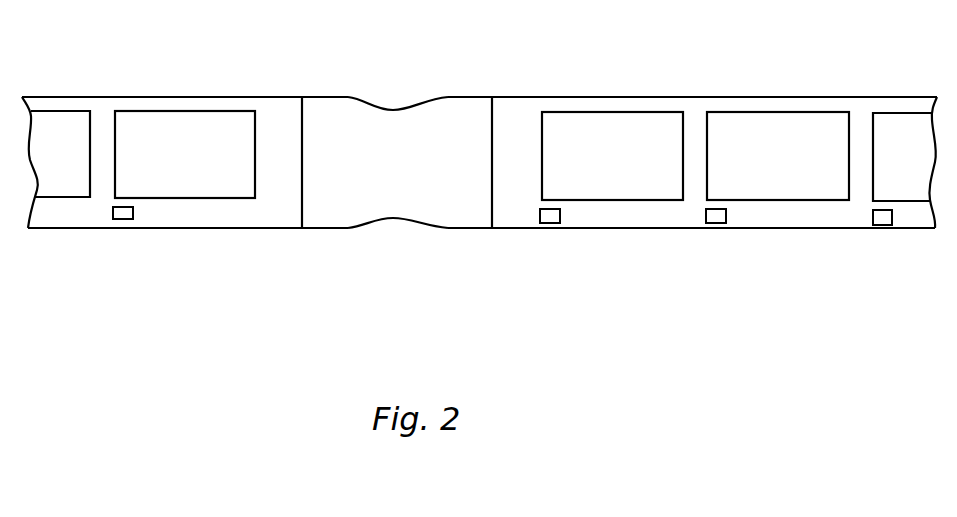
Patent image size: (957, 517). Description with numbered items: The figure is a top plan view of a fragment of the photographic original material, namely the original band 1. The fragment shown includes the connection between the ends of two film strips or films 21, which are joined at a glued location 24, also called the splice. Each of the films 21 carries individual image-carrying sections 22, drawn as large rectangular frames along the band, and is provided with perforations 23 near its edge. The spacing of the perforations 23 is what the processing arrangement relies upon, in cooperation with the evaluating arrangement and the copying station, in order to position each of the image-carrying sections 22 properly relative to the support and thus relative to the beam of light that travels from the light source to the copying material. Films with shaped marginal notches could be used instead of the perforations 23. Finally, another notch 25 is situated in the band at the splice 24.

The original band 1 is at (875, 243).
The film strip 21 is at (277, 100).
The image-carrying section 22 is at (177, 130).
The perforation 23 is at (130, 215).
The glued location 24 is at (400, 195).
The notch 25 is at (400, 103).